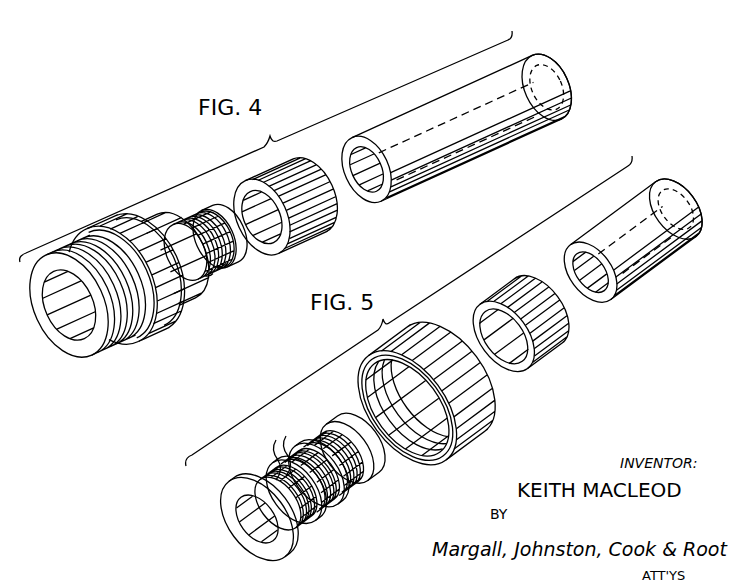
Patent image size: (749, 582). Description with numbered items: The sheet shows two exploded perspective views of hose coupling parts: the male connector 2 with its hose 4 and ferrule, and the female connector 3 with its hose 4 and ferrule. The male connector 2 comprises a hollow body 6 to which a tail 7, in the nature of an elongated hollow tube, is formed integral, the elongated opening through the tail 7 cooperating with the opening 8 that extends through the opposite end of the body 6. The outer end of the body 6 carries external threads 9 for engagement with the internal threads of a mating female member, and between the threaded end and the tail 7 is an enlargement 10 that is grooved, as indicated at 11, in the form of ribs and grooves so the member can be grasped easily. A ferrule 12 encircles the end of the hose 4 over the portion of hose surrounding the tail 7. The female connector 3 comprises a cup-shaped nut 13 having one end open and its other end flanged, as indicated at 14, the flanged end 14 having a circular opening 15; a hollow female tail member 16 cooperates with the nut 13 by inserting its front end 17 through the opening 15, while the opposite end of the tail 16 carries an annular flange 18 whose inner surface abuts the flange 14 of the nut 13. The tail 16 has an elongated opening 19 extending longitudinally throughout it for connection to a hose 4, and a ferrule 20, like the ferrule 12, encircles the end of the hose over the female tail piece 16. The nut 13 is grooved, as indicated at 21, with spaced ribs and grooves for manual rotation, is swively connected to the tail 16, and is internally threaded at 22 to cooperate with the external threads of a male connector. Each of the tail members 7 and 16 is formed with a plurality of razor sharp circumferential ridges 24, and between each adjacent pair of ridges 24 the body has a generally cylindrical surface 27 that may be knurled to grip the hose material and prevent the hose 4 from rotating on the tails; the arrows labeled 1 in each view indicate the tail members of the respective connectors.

In FIG. 4, the screen assembly 1 is at (207, 236).
In FIG. 5, the screen assembly 1 is at (328, 468).
In FIG. 4, the male connector 2 is at (123, 279).
In FIG. 4, the female connector 3 is at (97, 258).
In FIG. 5, the female connector 3 is at (433, 409).
In FIG. 4, the hose 4 is at (483, 155).
In FIG. 5, the hose 4 is at (660, 246).
In FIG. 4, the hollow body 6 is at (70, 245).
In FIG. 4, the tail 7 is at (203, 216).
In FIG. 4, the opening 8 is at (74, 323).
In FIG. 4, the external threads 9 is at (101, 233).
In FIG. 4, the enlargement 10 is at (129, 230).
In FIG. 4, the grooves 11 is at (172, 314).
In FIG. 4, the ferrule 12 is at (313, 176).
In FIG. 5, the nut 13 is at (490, 402).
In FIG. 5, the flanged end 14 is at (420, 352).
In FIG. 5, the circular opening 15 is at (431, 456).
In FIG. 5, the female tail member 16 is at (314, 534).
In FIG. 5, the front end 17 is at (347, 440).
In FIG. 5, the annular flange 18 is at (248, 485).
In FIG. 5, the elongated opening 19 is at (242, 523).
In FIG. 5, the ferrule 20 is at (526, 356).
In FIG. 5, the grooving 21 is at (466, 438).
In FIG. 5, the internal threads 22 is at (406, 442).
In FIG. 4, the circumferential ridges 24 is at (187, 232).
In FIG. 5, the circumferential ridges 24 is at (318, 512).
In FIG. 4, the cylindrical surface 27 is at (196, 285).
In FIG. 5, the cylindrical surface 27 is at (279, 432).